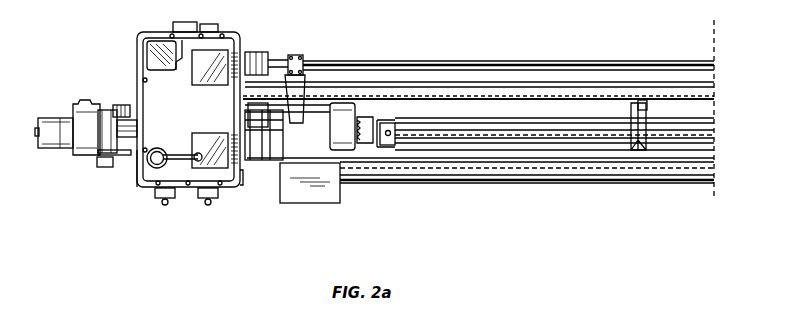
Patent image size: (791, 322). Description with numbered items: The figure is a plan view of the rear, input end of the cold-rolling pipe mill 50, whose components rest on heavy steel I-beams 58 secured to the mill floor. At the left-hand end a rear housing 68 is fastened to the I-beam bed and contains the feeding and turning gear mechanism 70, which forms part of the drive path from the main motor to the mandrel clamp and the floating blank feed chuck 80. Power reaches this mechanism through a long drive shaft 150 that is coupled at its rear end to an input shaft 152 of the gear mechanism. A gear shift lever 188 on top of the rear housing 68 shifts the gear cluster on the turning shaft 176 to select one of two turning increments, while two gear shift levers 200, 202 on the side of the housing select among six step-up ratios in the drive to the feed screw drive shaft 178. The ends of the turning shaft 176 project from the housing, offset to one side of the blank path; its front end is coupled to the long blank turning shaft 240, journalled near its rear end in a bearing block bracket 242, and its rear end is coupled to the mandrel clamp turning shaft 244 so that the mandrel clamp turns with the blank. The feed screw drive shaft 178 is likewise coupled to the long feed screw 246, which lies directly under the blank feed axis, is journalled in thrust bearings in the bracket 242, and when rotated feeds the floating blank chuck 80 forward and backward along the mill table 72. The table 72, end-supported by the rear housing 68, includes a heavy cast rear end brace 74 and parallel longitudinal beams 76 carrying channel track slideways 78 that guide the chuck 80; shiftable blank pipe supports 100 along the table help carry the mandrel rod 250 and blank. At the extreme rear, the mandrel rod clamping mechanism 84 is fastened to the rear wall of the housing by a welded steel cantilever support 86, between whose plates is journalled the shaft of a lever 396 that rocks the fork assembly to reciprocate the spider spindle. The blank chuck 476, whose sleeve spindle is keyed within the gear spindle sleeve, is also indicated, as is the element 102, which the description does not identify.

The pipe mill 50 is at (546, 210).
The I-beams 58 is at (452, 85).
The rear housing 68 is at (146, 190).
The feeding and turning gear mechanism 70 is at (170, 90).
The mill table 72 is at (469, 115).
The rear end brace 74 is at (250, 162).
The longitudinal beams 76 is at (382, 99).
The channel track slideways 78 is at (402, 118).
The floating blank feed chuck 80 is at (354, 92).
The mandrel rod clamping mechanism 84 is at (67, 113).
The cantilever support 86 is at (123, 158).
The blank pipe supports 100 is at (641, 104).
The control box 102 is at (316, 191).
The drive shaft 150 is at (566, 62).
The input shaft 152 is at (247, 50).
The turning shaft 176 is at (128, 104).
The feed screw drive shaft 178 is at (243, 176).
The gear shift lever 188 is at (190, 152).
The gear shift lever 200 is at (166, 206).
The gear shift lever 202 is at (209, 206).
The blank turning shaft 240 is at (294, 54).
The bearing block bracket 242 is at (298, 108).
The mandrel clamp turning shaft 244 is at (103, 106).
The feed screw 246 is at (258, 150).
The mandrel rod 250 is at (149, 148).
The lever 396 is at (106, 168).
The blank chuck 476 is at (392, 141).